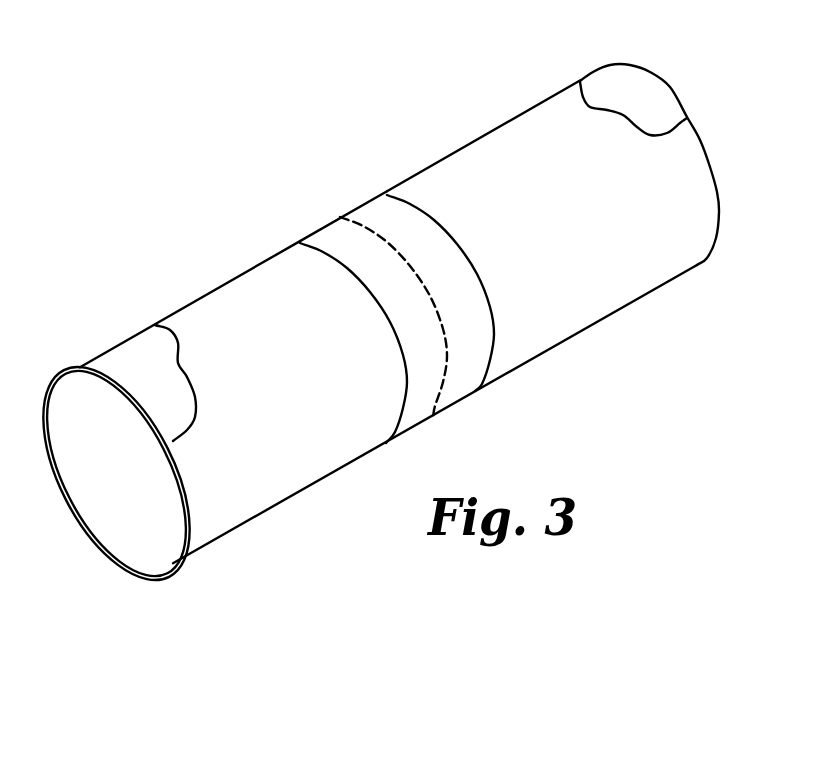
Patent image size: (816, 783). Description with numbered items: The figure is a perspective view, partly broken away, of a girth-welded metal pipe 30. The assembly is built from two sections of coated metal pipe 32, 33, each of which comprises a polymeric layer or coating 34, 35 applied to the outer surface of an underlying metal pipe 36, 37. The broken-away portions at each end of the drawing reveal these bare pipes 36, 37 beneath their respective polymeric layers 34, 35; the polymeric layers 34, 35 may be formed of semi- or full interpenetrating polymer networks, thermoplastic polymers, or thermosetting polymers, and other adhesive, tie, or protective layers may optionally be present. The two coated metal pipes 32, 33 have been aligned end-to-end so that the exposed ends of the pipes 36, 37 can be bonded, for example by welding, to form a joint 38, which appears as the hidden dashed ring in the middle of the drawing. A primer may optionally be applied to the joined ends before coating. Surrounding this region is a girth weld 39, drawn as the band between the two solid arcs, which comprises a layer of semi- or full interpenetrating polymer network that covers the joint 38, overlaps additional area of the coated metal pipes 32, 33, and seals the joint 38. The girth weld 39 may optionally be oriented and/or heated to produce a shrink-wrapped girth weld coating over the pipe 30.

The girth-welded metal pipe 30 is at (390, 90).
The coated metal pipe 32 is at (140, 352).
The coated metal pipe 33 is at (623, 78).
The polymeric layer 34 is at (208, 315).
The polymeric layer 35 is at (523, 132).
The pipe 36 is at (112, 360).
The pipe 37 is at (657, 98).
The joint 38 is at (450, 355).
The girth weld 39 is at (332, 235).